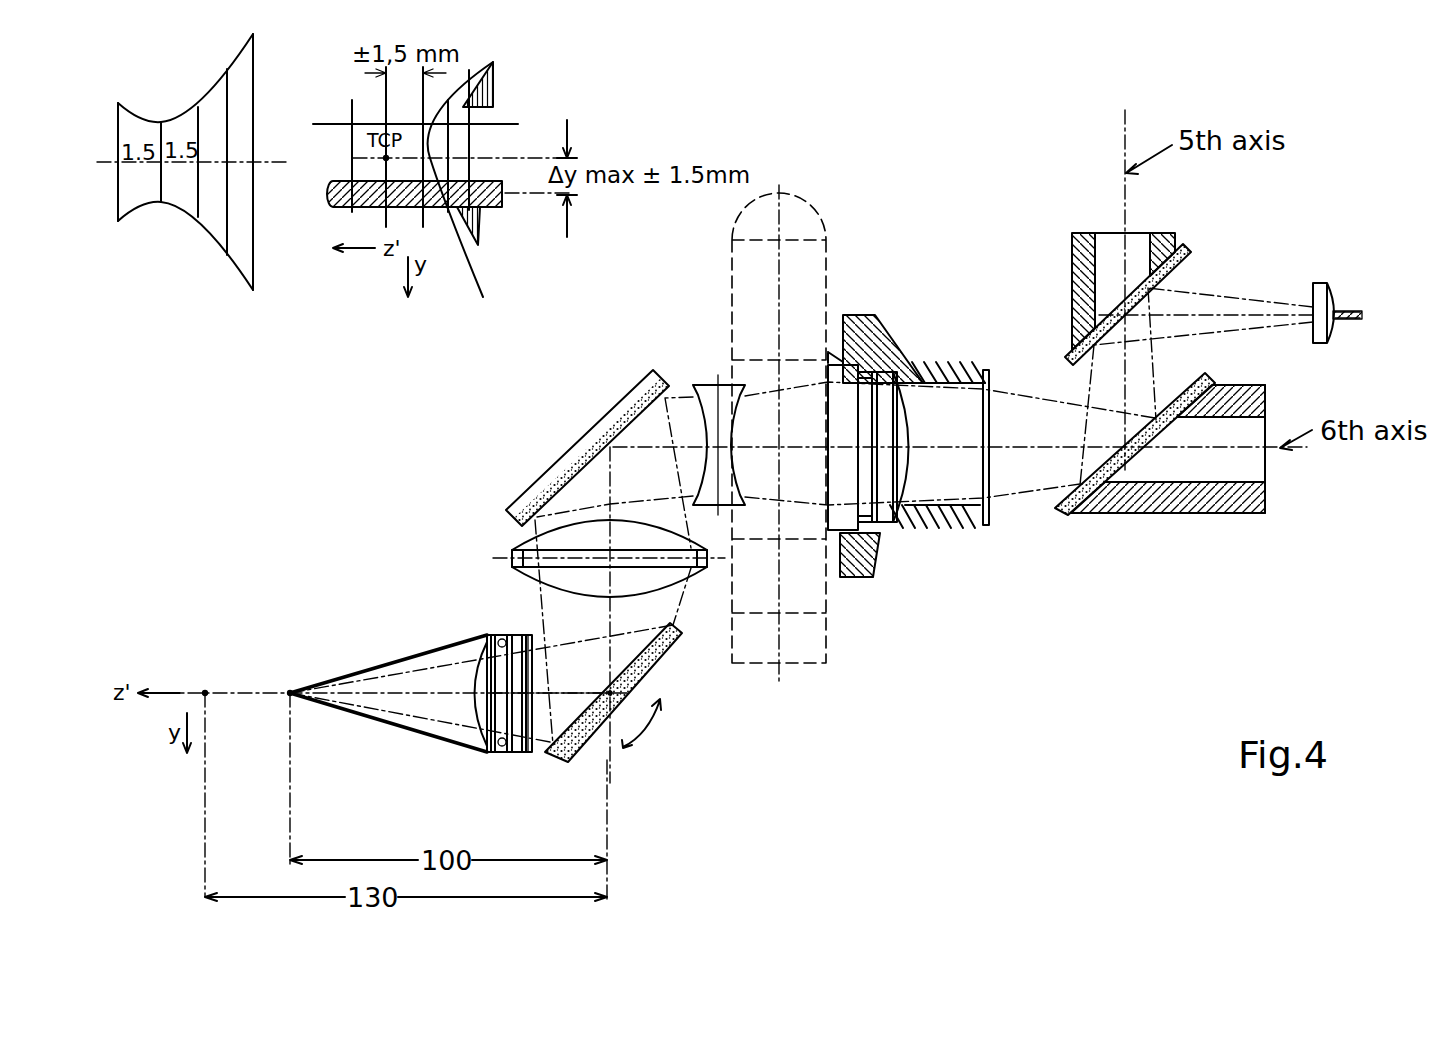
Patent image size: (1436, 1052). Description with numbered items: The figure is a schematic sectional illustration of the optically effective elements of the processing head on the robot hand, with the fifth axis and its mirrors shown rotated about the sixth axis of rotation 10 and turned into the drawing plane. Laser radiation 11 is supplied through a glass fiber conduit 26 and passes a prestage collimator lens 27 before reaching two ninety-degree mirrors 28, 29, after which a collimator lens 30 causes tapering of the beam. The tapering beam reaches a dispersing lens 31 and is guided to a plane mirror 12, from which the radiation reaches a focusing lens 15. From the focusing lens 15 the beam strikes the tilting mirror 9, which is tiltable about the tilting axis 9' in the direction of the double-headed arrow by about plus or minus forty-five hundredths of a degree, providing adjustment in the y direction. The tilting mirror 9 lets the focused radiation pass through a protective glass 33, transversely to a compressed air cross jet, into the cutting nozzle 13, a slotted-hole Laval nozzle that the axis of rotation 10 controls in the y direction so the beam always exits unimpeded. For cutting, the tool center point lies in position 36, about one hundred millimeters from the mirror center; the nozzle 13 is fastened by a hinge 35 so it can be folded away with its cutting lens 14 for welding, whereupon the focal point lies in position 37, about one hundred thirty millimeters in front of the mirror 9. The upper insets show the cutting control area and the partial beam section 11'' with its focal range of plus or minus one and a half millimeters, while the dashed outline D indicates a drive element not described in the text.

The tilting mirror 9 is at (625, 692).
The tilting axis 9' is at (552, 680).
The sixth axis of rotation 10 is at (1287, 472).
The laser radiation 11 is at (1196, 375).
The beam profile 11'' is at (478, 187).
The plane mirror 12 is at (622, 401).
The cutting nozzle 13 is at (373, 725).
The cutting lens 14 is at (482, 708).
The focusing lens 15 is at (522, 560).
The glass fiber conduit 26 is at (1350, 322).
The prestage collimator lens 27 is at (1320, 293).
The 90° mirror 28 is at (1180, 254).
The 90° mirror 29 is at (1055, 513).
The collimator lens 30 is at (882, 520).
The dispersing lens 31 is at (707, 391).
The protective glass 33 is at (545, 756).
The hinge 35 is at (500, 753).
The position of the tool center point for cutting 36 is at (290, 691).
The position of the tool center point for joining 37 is at (205, 691).
The rotary drive D is at (805, 222).